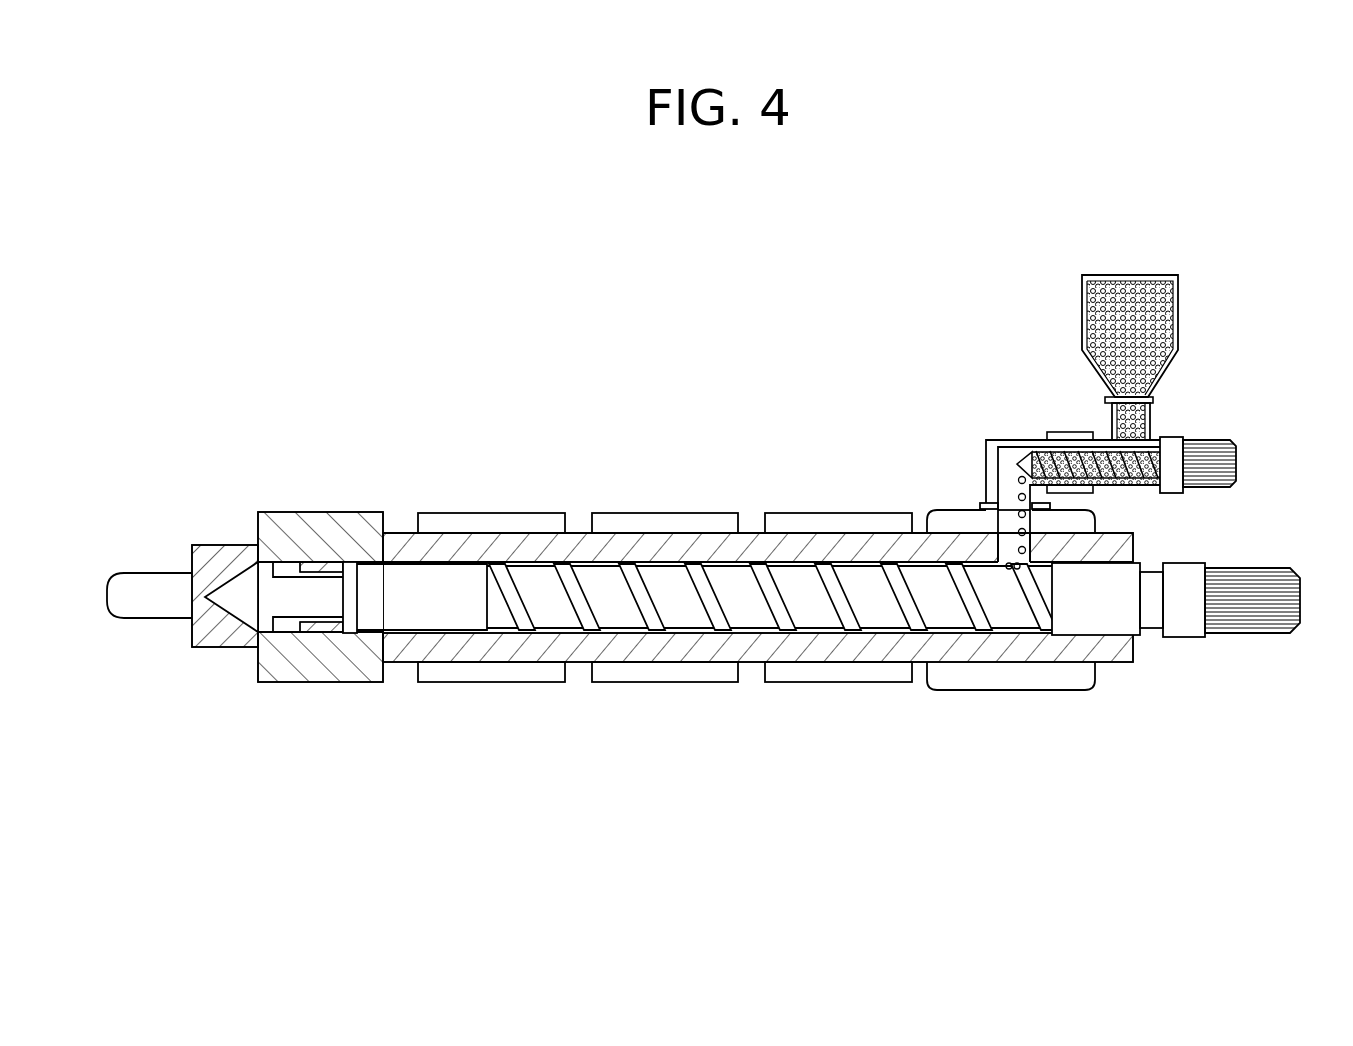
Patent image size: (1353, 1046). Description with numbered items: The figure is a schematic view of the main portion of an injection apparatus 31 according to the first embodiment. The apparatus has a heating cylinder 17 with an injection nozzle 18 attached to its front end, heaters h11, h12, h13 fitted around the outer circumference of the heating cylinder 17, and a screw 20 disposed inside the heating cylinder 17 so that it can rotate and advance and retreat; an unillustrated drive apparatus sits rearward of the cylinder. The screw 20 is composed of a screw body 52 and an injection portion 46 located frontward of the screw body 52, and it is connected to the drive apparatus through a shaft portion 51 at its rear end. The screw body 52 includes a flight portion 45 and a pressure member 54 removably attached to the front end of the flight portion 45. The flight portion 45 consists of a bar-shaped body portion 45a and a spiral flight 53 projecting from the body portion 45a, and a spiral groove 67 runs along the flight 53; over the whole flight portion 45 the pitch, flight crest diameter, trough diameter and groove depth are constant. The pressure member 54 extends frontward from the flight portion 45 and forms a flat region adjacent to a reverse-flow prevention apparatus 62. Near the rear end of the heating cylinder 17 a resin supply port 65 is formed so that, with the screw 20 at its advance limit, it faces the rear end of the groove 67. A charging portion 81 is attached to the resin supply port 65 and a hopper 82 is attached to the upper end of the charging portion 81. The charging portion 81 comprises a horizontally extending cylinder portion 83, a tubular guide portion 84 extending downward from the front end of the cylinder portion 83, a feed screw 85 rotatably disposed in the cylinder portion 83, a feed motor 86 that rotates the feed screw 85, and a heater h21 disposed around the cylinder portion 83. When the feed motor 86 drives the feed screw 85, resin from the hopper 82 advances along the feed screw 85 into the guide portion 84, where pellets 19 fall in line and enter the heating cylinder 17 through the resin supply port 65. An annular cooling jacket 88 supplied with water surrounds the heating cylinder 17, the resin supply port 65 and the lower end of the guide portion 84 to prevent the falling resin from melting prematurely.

The heating cylinder 17 is at (578, 529).
The injection nozzle 18 is at (146, 572).
The pellets 19 is at (1032, 517).
The screw 20 is at (745, 551).
The injection apparatus 31 is at (899, 357).
The flight portion 45 is at (802, 787).
The body portion 45a is at (883, 607).
The injection portion 46 is at (237, 632).
The shaft portion 51 is at (1181, 620).
The screw body 52 is at (634, 640).
The flight 53 is at (843, 603).
The pressure member 54 is at (435, 612).
The reverse-flow prevention apparatus 62 is at (320, 562).
The resin supply port 65 is at (1010, 548).
The groove 67 is at (820, 628).
The charging portion 81 is at (1209, 399).
The hopper 82 is at (1178, 293).
The cylinder portion 83 is at (1027, 440).
The guide portion 84 is at (995, 476).
The feed screw 85 is at (1060, 448).
The feed motor 86 is at (1238, 456).
The cooling jacket 88 is at (1083, 525).
The heater h11 is at (505, 513).
The heater h12 is at (657, 513).
The heater h13 is at (836, 513).
The heater h21 is at (1065, 432).